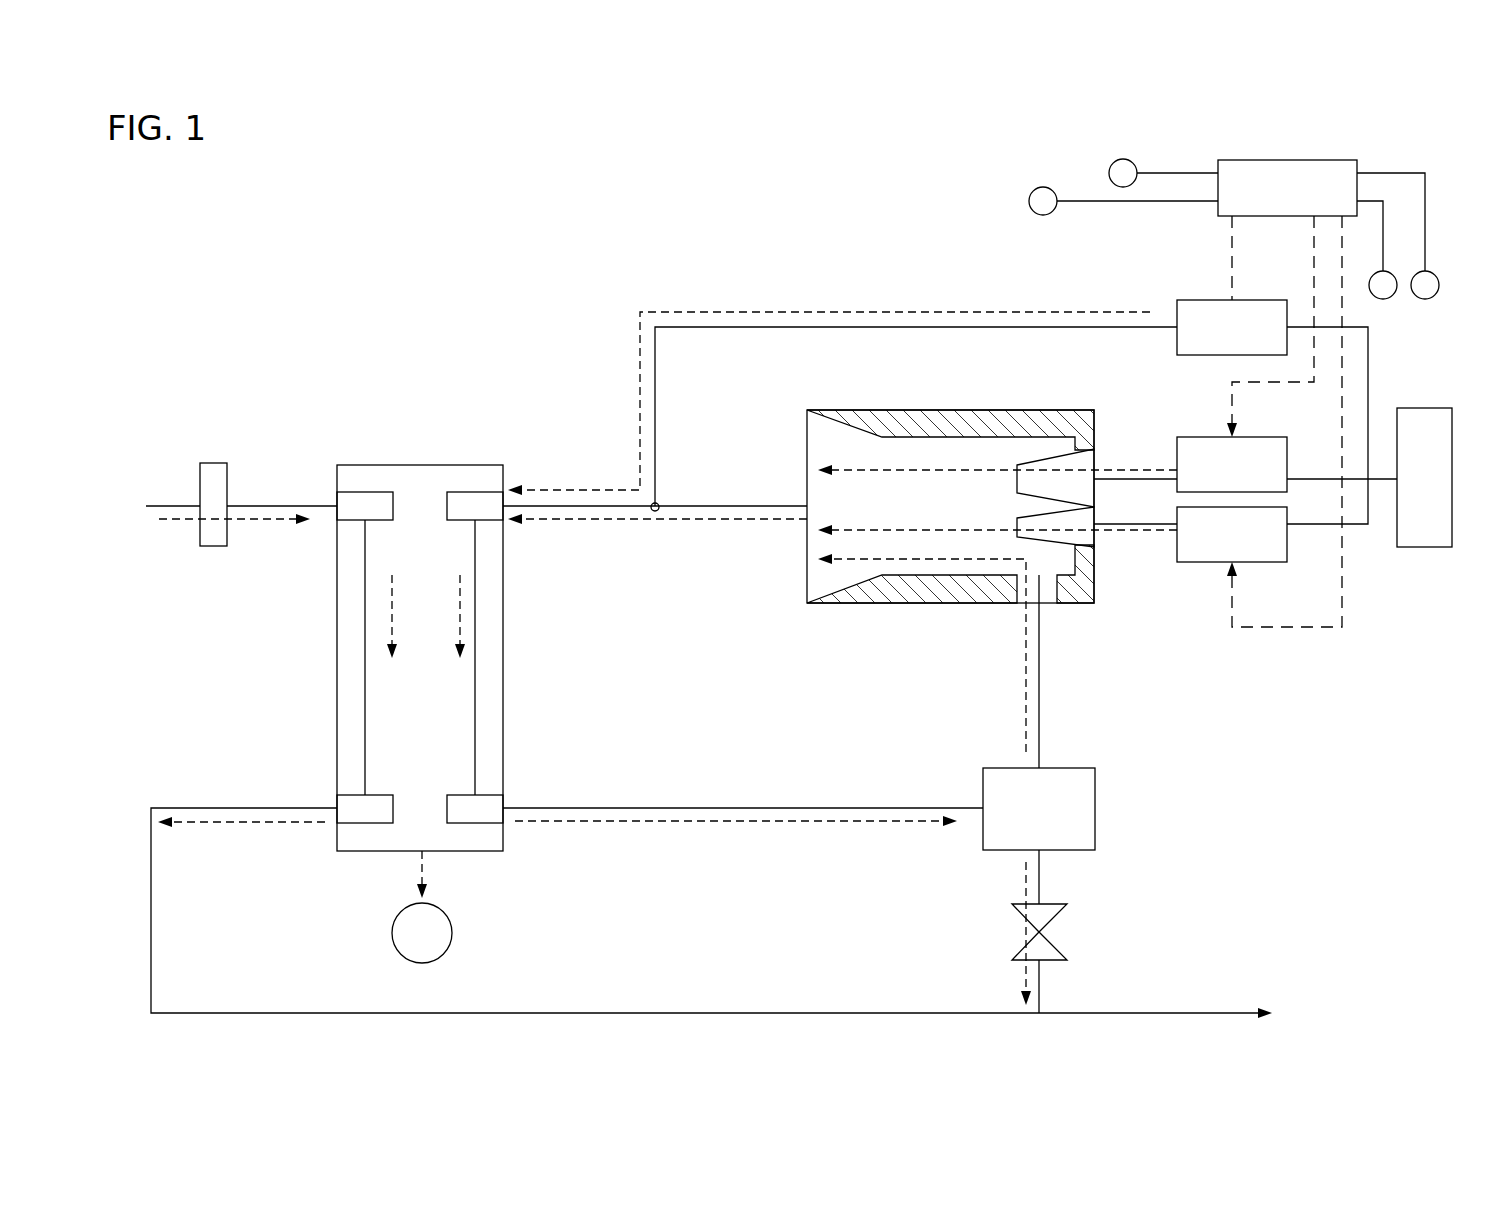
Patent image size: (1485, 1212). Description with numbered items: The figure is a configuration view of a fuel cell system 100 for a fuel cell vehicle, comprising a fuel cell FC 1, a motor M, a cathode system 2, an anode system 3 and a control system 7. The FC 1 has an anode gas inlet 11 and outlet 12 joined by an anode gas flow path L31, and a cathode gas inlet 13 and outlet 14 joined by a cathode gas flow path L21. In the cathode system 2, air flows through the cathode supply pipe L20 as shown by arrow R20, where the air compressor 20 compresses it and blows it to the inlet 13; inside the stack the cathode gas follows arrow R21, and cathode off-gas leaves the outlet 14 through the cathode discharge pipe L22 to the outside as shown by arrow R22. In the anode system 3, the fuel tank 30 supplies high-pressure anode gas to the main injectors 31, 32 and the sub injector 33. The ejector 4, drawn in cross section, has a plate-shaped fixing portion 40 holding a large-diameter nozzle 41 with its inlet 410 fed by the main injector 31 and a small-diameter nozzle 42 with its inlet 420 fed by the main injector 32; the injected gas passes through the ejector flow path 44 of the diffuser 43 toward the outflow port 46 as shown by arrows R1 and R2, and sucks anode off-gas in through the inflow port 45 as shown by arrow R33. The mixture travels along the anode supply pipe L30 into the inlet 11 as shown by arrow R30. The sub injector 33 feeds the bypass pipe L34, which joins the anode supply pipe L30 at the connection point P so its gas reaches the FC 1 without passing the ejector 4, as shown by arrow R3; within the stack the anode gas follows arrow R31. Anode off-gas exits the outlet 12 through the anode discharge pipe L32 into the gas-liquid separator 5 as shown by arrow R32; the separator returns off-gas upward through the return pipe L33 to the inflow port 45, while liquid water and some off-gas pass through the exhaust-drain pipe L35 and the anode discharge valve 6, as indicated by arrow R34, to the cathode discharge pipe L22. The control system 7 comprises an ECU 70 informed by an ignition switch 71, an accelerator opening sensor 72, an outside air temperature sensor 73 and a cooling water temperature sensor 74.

The fuel cell system 100 is at (354, 286).
The cathode system 2 is at (300, 418).
The FC (fuel cell) 1 is at (477, 465).
The inlet 11 is at (477, 492).
The outlet 12 is at (475, 824).
The inlet 13 is at (367, 491).
The outlet 14 is at (365, 824).
The air compressor 20 is at (214, 463).
The cathode supply pipe L20 is at (254, 506).
The arrow R20 is at (234, 535).
The arrow R21 is at (397, 599).
The arrow R31 is at (453, 599).
The cathode gas flow path L21 is at (365, 628).
The anode gas flow path L31 is at (475, 628).
The cathode discharge pipe L22 is at (255, 808).
The arrow R22 is at (241, 838).
The motor M is at (422, 907).
The anode supply pipe L30 is at (695, 506).
The arrow R30 is at (657, 534).
The connection point P is at (660, 502).
The anode discharge pipe L32 is at (738, 808).
The arrow R32 is at (736, 838).
The anode system 3 is at (1011, 295).
The bypass pipe L34 is at (917, 327).
The arrow R3 is at (829, 383).
The sub injector 33 is at (1260, 300).
The main injector 31 is at (1260, 437).
The main injector 32 is at (1287, 515).
The fuel tank 30 is at (1425, 408).
The arrow R1 is at (997, 462).
The arrow R2 is at (997, 545).
The ejector 4 is at (1142, 408).
The fixing portion 40 is at (1082, 410).
The large-diameter nozzle 41 is at (1042, 458).
The inlet 410 is at (1094, 468).
The inlet 420 is at (1094, 522).
The diffuser 43 is at (912, 410).
The ejector flow path 44 is at (898, 520).
The inflow port 45 is at (1048, 604).
The outflow port 46 is at (807, 455).
The small-diameter nozzle 42 is at (1094, 567).
The return pipe L33 is at (1040, 720).
The arrow R33 is at (922, 653).
The gas-liquid separator 5 is at (1072, 768).
The anode discharge valve 6 is at (1060, 904).
The arrow R34 is at (999, 928).
The exhaust-drain pipe L35 is at (1045, 1013).
The control system 7 is at (1372, 157).
The ECU 70 is at (1330, 160).
The ignition switch 71 is at (1388, 271).
The accelerator opening sensor 72 is at (1430, 271).
The temperature sensor 73 is at (1133, 160).
The temperature sensor 74 is at (1053, 188).